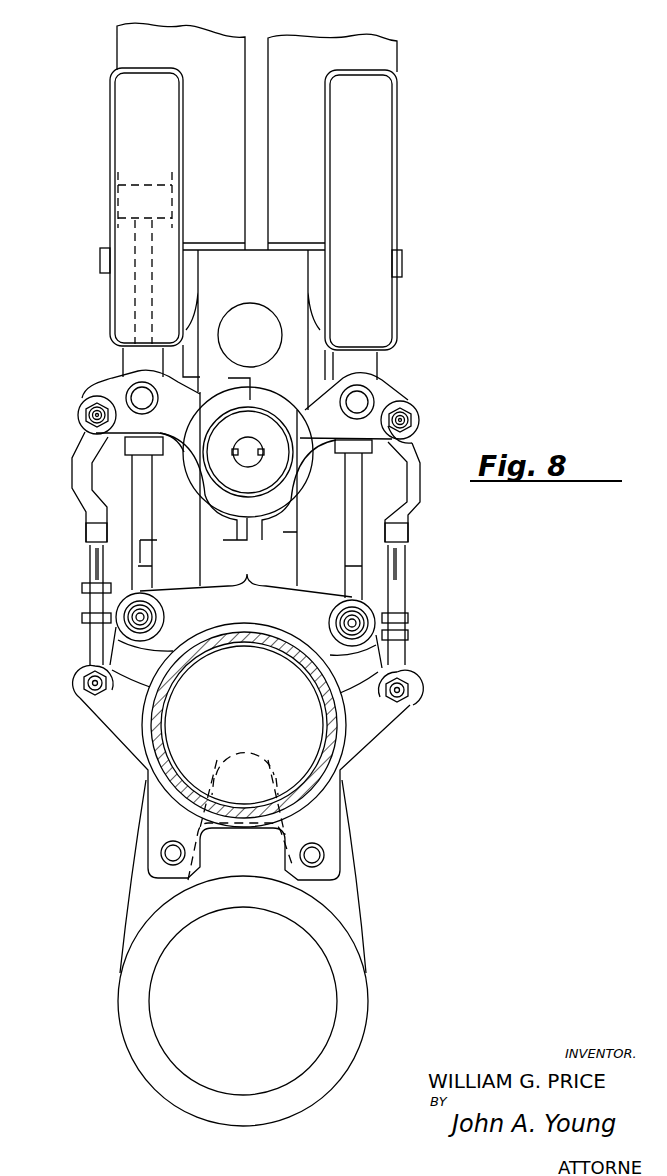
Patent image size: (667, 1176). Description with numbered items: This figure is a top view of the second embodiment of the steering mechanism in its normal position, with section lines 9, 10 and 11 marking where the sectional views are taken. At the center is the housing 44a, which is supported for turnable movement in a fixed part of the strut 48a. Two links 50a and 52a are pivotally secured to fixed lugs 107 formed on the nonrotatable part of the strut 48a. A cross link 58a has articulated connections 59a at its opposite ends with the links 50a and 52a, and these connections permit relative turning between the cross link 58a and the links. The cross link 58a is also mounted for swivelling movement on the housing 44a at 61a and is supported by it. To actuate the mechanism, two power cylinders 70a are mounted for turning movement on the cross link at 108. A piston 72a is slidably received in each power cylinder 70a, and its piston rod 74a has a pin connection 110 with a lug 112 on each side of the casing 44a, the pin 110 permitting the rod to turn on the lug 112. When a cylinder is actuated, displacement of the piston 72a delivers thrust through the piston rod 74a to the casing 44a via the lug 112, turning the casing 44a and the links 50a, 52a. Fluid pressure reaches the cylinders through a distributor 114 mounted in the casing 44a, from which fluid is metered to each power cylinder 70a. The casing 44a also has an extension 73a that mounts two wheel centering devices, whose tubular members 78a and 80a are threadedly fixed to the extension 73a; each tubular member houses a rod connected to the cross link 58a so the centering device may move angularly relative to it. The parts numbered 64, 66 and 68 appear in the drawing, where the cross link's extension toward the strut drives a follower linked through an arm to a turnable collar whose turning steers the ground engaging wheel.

The section line 9- 9 is at (200, 12).
The section line 10- 10 is at (375, 430).
The section line 11- 11 is at (377, 53).
The housing 44a is at (292, 528).
The strut 48a is at (350, 758).
The link 50a is at (410, 510).
The link 52a is at (95, 512).
The cross link 58a is at (354, 398).
The articulated connection 59a is at (86, 418).
The swivel mounting 61a is at (165, 372).
The eccentric 64 is at (263, 760).
The ring 66 is at (157, 985).
The key 68 is at (207, 822).
The power cylinder 70a is at (130, 115).
The piston 72a is at (127, 198).
The extension 73a is at (300, 290).
The piston rod 74a is at (130, 297).
The tubular member 78a is at (388, 65).
The tubular member 80a is at (132, 48).
The fixed lug 107 is at (112, 715).
The power cylinder mounting 108 is at (404, 443).
The pin connection 110 is at (138, 617).
The lug 112 is at (168, 602).
The distributor 114 is at (236, 458).